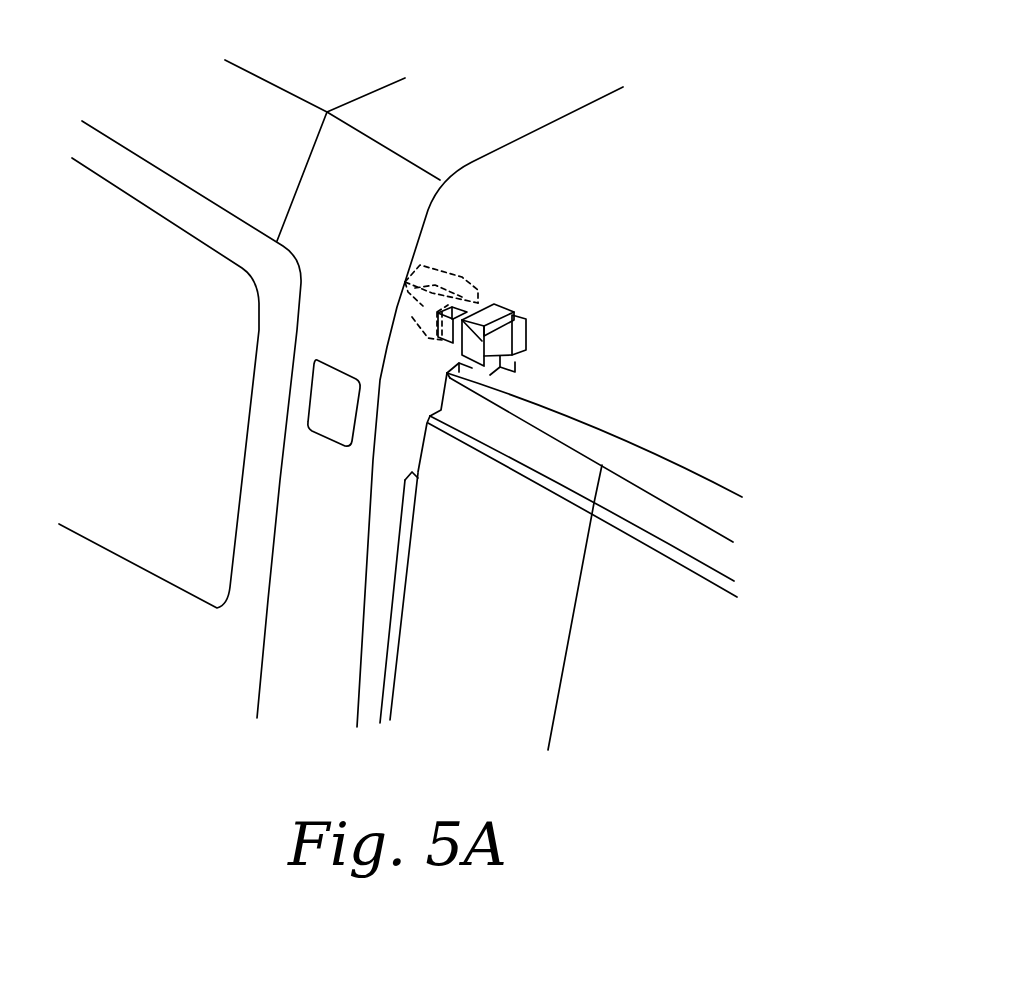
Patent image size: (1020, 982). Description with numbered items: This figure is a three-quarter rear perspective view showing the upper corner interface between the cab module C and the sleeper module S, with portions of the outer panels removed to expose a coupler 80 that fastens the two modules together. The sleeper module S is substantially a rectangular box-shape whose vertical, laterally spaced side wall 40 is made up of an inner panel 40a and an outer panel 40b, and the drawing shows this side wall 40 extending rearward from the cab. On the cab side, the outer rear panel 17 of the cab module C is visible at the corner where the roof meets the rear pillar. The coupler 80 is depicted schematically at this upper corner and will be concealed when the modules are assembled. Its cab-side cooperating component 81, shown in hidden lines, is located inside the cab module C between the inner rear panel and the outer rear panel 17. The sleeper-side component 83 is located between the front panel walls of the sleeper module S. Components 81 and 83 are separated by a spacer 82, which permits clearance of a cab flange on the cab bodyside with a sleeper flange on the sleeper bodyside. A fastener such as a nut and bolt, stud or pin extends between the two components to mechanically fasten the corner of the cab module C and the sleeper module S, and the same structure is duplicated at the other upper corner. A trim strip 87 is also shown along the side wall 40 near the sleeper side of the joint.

The cab module C is at (376, 376).
The outer rear panel 17 is at (582, 142).
The coupler 80 is at (460, 289).
The cab-side cooperating component 81 is at (403, 279).
The spacer 82 is at (453, 338).
The sleeper-side component 83 is at (532, 335).
The side wall 40 is at (618, 601).
The inner panel 40a is at (712, 484).
The outer panel 40b is at (726, 553).
The trim strip 87 is at (404, 537).
The sleeper module S is at (597, 824).